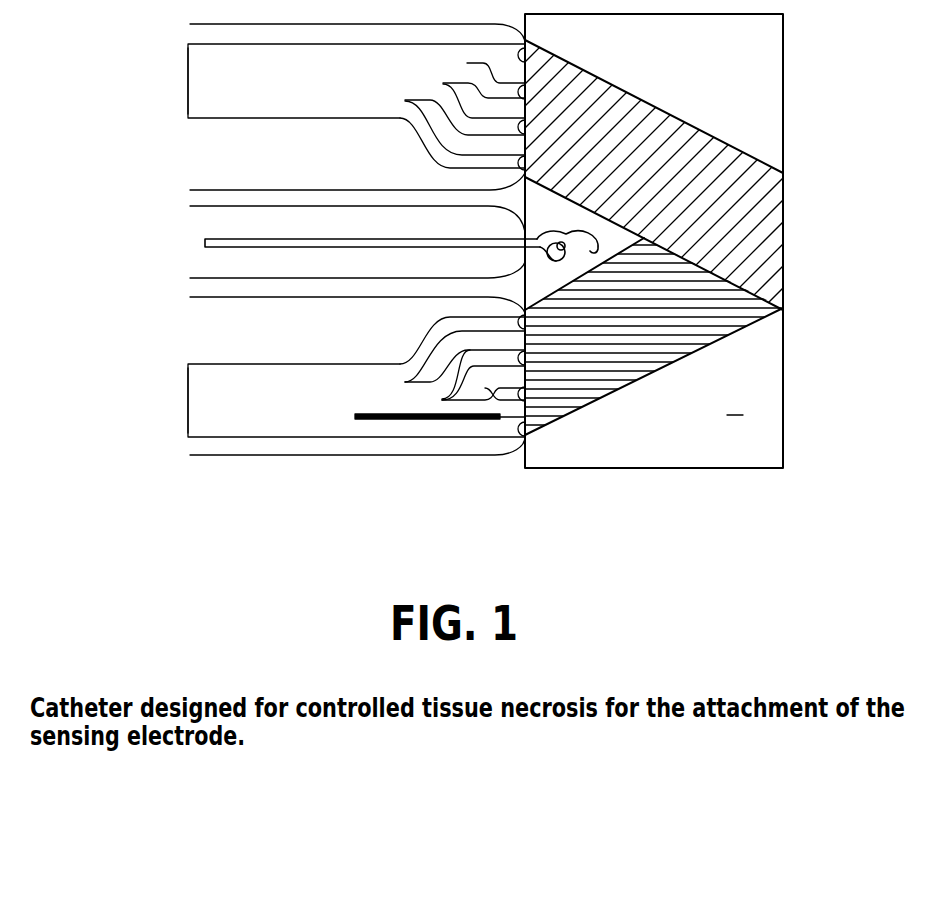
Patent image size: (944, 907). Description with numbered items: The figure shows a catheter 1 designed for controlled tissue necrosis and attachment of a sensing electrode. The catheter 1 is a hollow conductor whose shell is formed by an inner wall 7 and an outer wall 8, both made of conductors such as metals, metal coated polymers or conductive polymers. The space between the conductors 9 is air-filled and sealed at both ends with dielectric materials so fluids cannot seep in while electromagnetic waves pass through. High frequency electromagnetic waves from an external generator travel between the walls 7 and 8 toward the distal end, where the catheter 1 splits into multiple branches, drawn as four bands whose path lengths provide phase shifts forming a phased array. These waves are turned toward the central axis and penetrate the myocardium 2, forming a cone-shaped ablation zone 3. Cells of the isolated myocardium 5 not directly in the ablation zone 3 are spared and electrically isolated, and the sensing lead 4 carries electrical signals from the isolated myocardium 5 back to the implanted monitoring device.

The catheter 1 is at (427, 189).
The myocardium 2 is at (655, 241).
The ablation zone 3 is at (677, 181).
The sensing lead 4 is at (212, 238).
The isolated myocardium 5 is at (584, 232).
The inner wall 7 is at (238, 120).
The outer wall 8 is at (234, 438).
The space between the conductors 9 is at (188, 79).